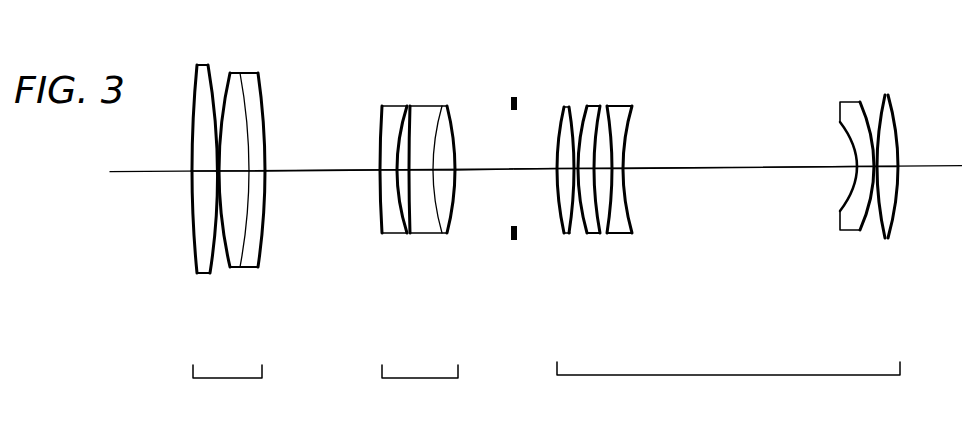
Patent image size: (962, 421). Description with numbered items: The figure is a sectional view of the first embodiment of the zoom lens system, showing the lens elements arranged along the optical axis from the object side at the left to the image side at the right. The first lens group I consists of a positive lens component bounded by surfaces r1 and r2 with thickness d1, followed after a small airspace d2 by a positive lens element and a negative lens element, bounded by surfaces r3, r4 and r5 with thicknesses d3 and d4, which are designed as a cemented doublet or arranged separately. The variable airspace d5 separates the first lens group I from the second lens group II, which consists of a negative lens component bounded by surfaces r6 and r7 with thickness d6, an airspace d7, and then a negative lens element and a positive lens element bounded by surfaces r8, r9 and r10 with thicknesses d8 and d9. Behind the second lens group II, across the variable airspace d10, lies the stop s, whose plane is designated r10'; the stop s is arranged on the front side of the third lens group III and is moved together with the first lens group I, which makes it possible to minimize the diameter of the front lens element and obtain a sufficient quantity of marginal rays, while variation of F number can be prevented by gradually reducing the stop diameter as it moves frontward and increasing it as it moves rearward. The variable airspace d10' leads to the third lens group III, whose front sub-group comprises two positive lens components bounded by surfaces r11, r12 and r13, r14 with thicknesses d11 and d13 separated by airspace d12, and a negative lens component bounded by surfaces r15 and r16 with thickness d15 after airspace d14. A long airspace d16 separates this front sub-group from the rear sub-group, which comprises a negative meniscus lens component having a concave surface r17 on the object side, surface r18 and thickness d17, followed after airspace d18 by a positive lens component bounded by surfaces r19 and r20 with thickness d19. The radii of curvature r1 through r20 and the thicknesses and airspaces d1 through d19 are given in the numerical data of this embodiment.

The radius of curvature of first lens surface r1 is at (196, 242).
The radius of curvature of second lens surface r2 is at (213, 266).
The radius of curvature of third lens surface r3 is at (227, 256).
The radius of curvature of fourth lens surface r4 is at (244, 255).
The radius of curvature of fifth lens surface r5 is at (262, 250).
The radius of curvature of sixth lens surface r6 is at (381, 218).
The radius of curvature of seventh lens surface r7 is at (403, 222).
The radius of curvature of eighth lens surface r8 is at (410, 215).
The radius of curvature of ninth lens surface r9 is at (437, 215).
The radius of curvature of tenth lens surface r10 is at (468, 186).
The stop surface r10' is at (515, 193).
The radius of curvature of eleventh lens surface r11 is at (559, 215).
The radius of curvature of twelfth lens surface r12 is at (571, 222).
The radius of curvature of thirteenth lens surface r13 is at (585, 222).
The radius of curvature of fourteenth lens surface r14 is at (598, 225).
The radius of curvature of fifteenth lens surface r15 is at (609, 232).
The radius of curvature of sixteenth lens surface r16 is at (628, 205).
The radius of curvature of seventeenth lens surface r17 is at (849, 192).
The radius of curvature of eighteenth lens surface r18 is at (865, 222).
The radius of curvature of nineteenth lens surface r19 is at (879, 228).
The radius of curvature of twentieth lens surface r20 is at (896, 213).
The thickness d1 is at (200, 171).
The airspace d2 is at (217, 169).
The thickness d3 is at (230, 171).
The thickness d4 is at (255, 171).
The variable airspace d5 is at (308, 171).
The thickness d6 is at (385, 168).
The airspace d7 is at (407, 170).
The thickness d8 is at (425, 170).
The thickness d9 is at (442, 170).
The variable airspace d10 is at (484, 149).
The variable airspace d10' is at (533, 147).
The thickness d11 is at (561, 168).
The airspace d12 is at (577, 168).
The thickness d13 is at (590, 168).
The airspace d14 is at (606, 168).
The thickness d15 is at (619, 168).
The airspace d16 is at (738, 167).
The thickness d17 is at (866, 166).
The airspace d18 is at (876, 165).
The thickness d19 is at (887, 165).
The stop s is at (517, 96).
The first lens group I is at (232, 406).
The second lens group II is at (424, 406).
The third lens group III is at (716, 403).